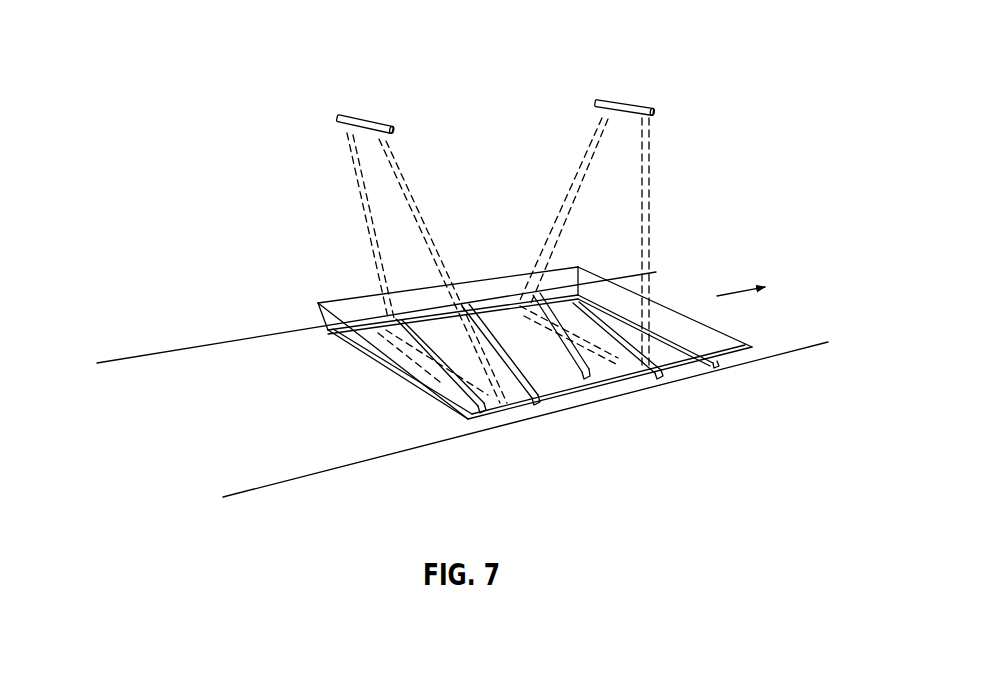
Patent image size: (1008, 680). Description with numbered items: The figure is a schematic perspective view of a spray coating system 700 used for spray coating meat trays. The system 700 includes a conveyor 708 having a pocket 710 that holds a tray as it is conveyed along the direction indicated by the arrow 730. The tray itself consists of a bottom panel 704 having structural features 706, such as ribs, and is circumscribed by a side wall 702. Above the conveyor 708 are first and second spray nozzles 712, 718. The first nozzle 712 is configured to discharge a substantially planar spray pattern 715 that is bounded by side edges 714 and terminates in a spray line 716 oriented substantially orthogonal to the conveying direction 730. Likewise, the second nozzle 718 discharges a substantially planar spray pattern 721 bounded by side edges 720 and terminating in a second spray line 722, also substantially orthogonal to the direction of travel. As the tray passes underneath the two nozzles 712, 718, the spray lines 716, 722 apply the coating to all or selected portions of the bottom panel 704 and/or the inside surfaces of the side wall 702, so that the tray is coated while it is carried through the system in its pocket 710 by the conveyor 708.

The spray coating system 700 is at (138, 48).
The side wall 702 is at (353, 312).
The bottom panel 704 is at (507, 317).
The structural features 706 is at (572, 382).
The conveyor 708 is at (279, 416).
The pocket 710 is at (368, 362).
The first spray nozzle 712 is at (358, 117).
The side edges 714 is at (397, 172).
The planar spray pattern 715 is at (427, 270).
The spray line 716 is at (433, 367).
The second spray nozzle 718 is at (618, 98).
The side edges 720 is at (643, 163).
The planar spray pattern 721 is at (627, 229).
The spray line 722 is at (620, 365).
The arrow 730 is at (734, 290).